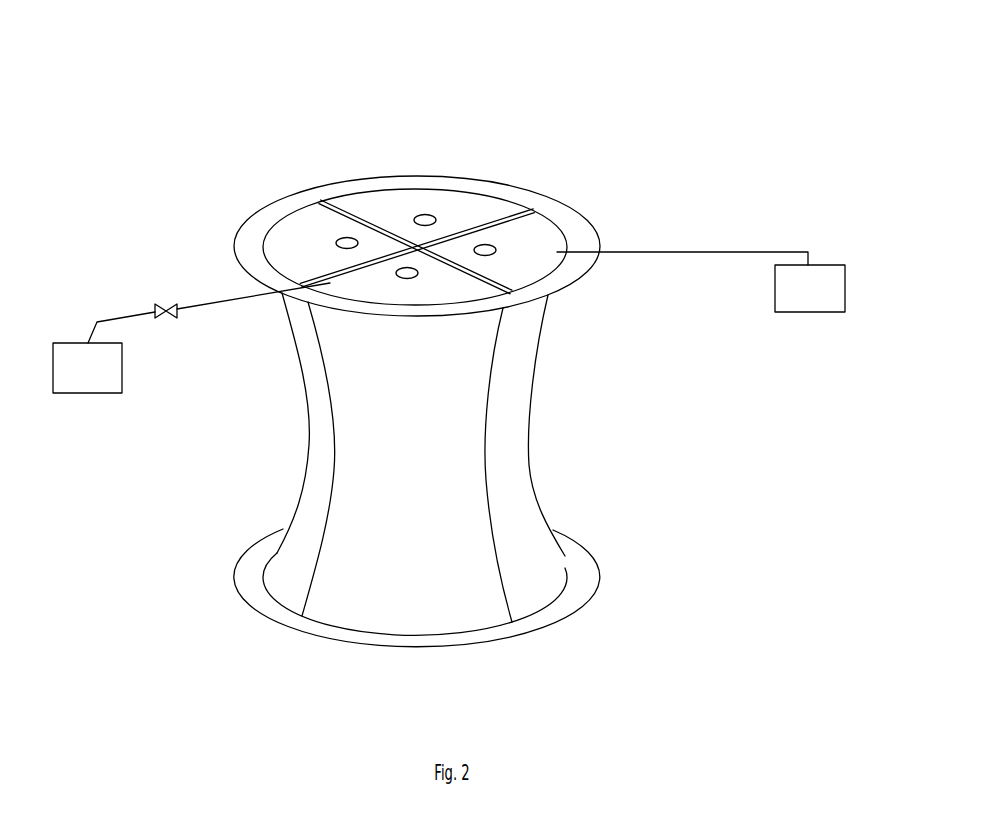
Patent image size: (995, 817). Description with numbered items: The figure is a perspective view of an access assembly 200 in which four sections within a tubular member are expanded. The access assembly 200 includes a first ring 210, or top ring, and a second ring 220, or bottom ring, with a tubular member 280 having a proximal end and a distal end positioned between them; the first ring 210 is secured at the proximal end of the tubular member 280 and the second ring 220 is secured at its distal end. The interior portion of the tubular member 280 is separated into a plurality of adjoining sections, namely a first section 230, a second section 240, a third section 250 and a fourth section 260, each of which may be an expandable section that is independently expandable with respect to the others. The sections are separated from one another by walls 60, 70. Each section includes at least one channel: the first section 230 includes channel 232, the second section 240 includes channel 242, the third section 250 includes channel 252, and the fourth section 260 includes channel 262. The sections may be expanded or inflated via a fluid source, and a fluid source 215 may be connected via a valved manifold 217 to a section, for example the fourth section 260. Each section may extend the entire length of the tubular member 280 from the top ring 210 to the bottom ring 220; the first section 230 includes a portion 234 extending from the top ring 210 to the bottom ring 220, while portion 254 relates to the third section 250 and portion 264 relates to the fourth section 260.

The access assembly 200 is at (593, 81).
The first ring 210 is at (610, 232).
The fluid source 215 is at (85, 393).
The valved manifold 217 is at (158, 306).
The second ring 220 is at (600, 571).
The first section 230 is at (541, 222).
The channel 232 is at (496, 249).
The portion 234 is at (523, 482).
The second section 240 is at (407, 203).
The channel 242 is at (436, 218).
The third section 250 is at (280, 291).
The channel 252 is at (336, 240).
The portion 254 is at (312, 492).
The fourth section 260 is at (462, 288).
The channel 262 is at (396, 275).
The portion 264 is at (420, 611).
The tubular member 280 is at (565, 407).
The wall 60 is at (521, 199).
The wall 70 is at (322, 201).